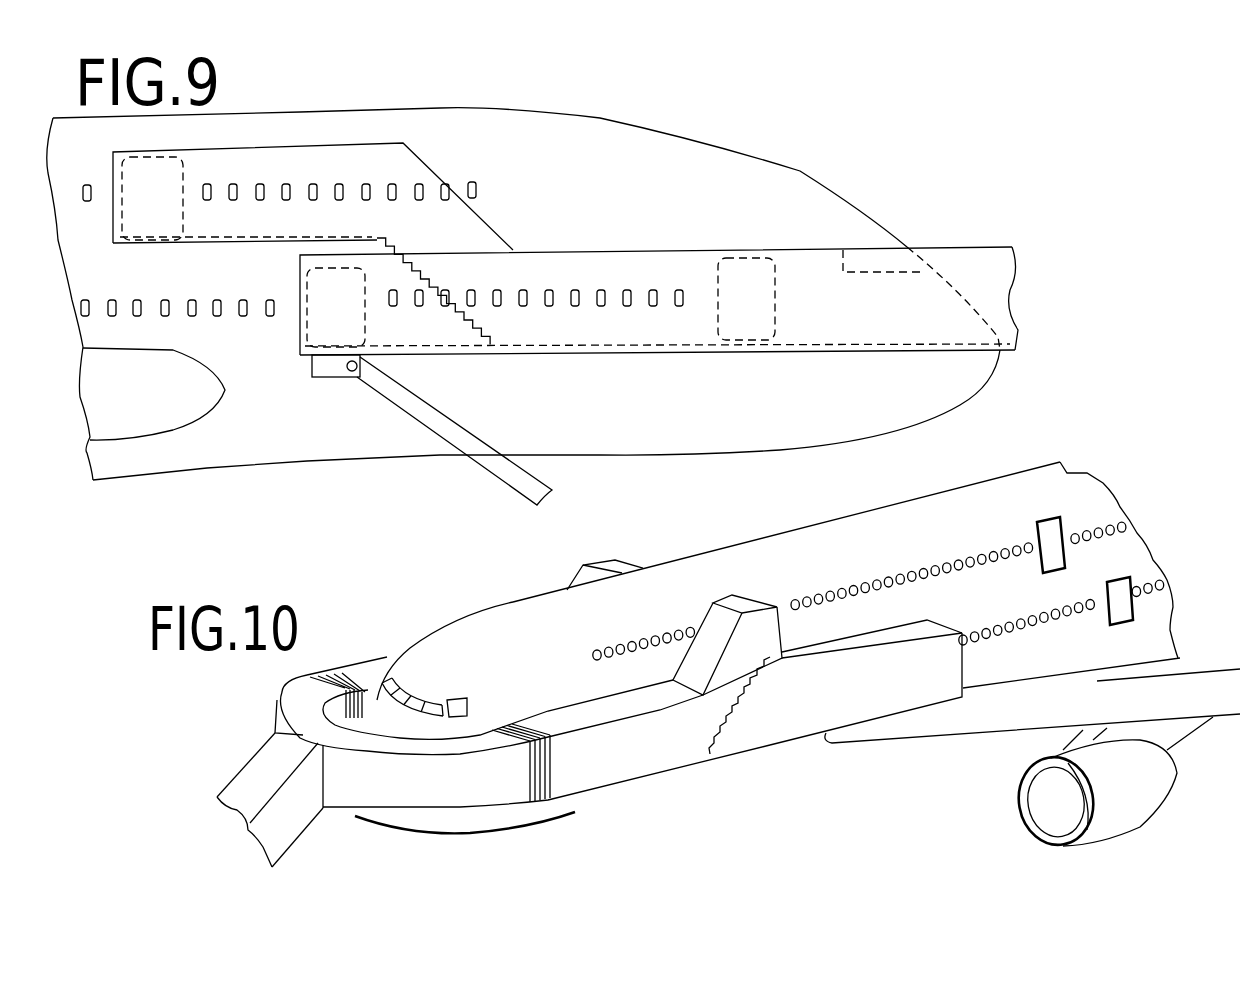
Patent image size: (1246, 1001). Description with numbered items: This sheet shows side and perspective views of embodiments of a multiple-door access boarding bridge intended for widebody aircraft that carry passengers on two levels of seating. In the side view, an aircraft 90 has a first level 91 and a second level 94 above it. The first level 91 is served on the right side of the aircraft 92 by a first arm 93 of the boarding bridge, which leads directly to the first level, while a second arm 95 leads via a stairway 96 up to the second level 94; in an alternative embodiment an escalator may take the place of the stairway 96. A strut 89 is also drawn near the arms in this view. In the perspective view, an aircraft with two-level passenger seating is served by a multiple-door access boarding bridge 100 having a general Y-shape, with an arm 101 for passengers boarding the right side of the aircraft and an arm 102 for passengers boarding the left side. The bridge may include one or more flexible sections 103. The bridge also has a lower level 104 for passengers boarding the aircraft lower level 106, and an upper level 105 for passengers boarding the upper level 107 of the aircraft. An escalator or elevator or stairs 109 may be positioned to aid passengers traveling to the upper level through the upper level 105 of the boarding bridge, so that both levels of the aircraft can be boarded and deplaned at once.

In FIG. 9, the support strut 89 is at (555, 492).
In FIG. 9, the aircraft 90 is at (782, 168).
In FIG. 9, the first level 91 is at (220, 310).
In FIG. 9, the right side of the aircraft 92 is at (897, 405).
In FIG. 9, the first arm 93 is at (695, 330).
In FIG. 9, the second level 94 is at (475, 180).
In FIG. 9, the second arm 95 is at (350, 140).
In FIG. 9, the stairway 96 is at (417, 255).
In FIG. 10, the multiple-door access boarding bridge 100 is at (290, 813).
In FIG. 10, the arm 101 is at (367, 660).
In FIG. 10, the arm 102 is at (630, 767).
In FIG. 10, the flexible section 103 is at (310, 673).
In FIG. 10, the lower level 104 is at (693, 733).
In FIG. 10, the upper level 105 is at (615, 560).
In FIG. 10, the aircraft lower level 106 is at (1167, 580).
In FIG. 10, the upper level of the aircraft 107 is at (1117, 525).
In FIG. 10, the escalator or elevator or stairs 109 is at (742, 705).